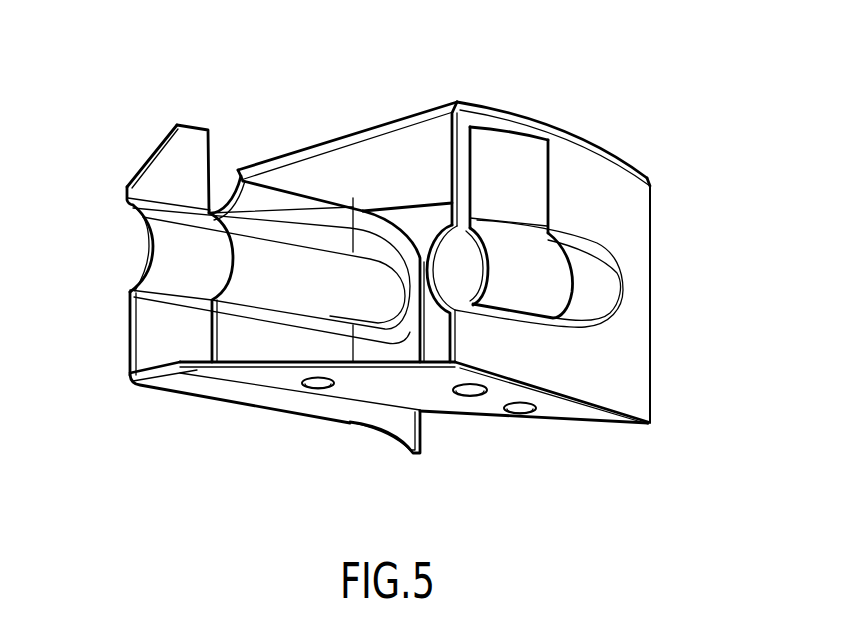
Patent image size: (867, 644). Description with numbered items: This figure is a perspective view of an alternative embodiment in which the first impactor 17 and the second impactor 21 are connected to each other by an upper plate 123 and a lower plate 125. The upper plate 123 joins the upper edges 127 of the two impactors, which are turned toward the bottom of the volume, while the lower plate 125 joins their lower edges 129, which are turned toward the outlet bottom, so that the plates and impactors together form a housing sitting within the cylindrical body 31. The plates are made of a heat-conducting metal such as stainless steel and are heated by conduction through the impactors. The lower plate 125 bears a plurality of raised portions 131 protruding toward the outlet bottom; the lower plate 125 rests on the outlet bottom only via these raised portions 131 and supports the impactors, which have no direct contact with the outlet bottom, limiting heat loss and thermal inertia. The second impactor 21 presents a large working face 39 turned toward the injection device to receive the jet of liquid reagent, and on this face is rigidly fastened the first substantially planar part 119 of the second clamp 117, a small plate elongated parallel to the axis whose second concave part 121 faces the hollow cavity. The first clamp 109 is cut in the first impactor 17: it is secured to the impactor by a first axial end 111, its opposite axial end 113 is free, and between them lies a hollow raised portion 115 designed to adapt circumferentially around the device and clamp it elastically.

The first impactor 17 is at (127, 232).
The second impactor 21 is at (398, 263).
The cylindrical body 31 is at (227, 333).
The large working face 39 is at (590, 177).
The first clamp 109 is at (143, 152).
The first axial end 111 is at (140, 353).
The opposite axial end 113 is at (192, 140).
The hollow raised portion 115 is at (137, 250).
The second clamp 117 is at (507, 122).
The first substantially planar part 119 is at (522, 153).
The second concave part 121 is at (563, 282).
The upper plate 123 is at (261, 170).
The lower plate 125 is at (432, 398).
The upper edges 127 is at (292, 188).
The lower edges 129 is at (185, 380).
The raised portions 131 is at (317, 390).